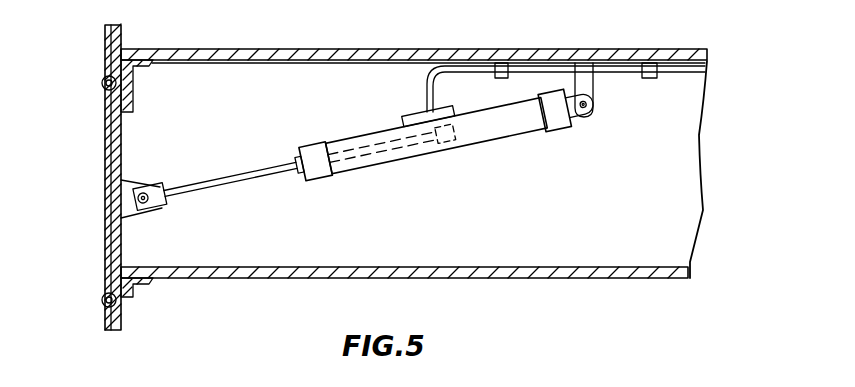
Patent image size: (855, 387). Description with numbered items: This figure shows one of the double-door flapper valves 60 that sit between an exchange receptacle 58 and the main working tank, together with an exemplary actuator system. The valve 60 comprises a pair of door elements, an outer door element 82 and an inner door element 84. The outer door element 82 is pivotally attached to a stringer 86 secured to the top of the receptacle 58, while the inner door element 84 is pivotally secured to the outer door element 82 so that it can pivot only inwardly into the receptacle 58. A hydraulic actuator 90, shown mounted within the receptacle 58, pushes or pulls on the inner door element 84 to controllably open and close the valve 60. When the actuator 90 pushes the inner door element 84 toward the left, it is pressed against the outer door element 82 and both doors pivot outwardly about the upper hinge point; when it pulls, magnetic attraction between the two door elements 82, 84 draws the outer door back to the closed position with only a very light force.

The receptacle 58 is at (362, 50).
The double-door flapper valve 60 is at (104, 209).
The outer door element 82 is at (103, 99).
The inner door element 84 is at (112, 172).
The stringer 86 is at (131, 100).
The hydraulic actuator 90 is at (338, 144).